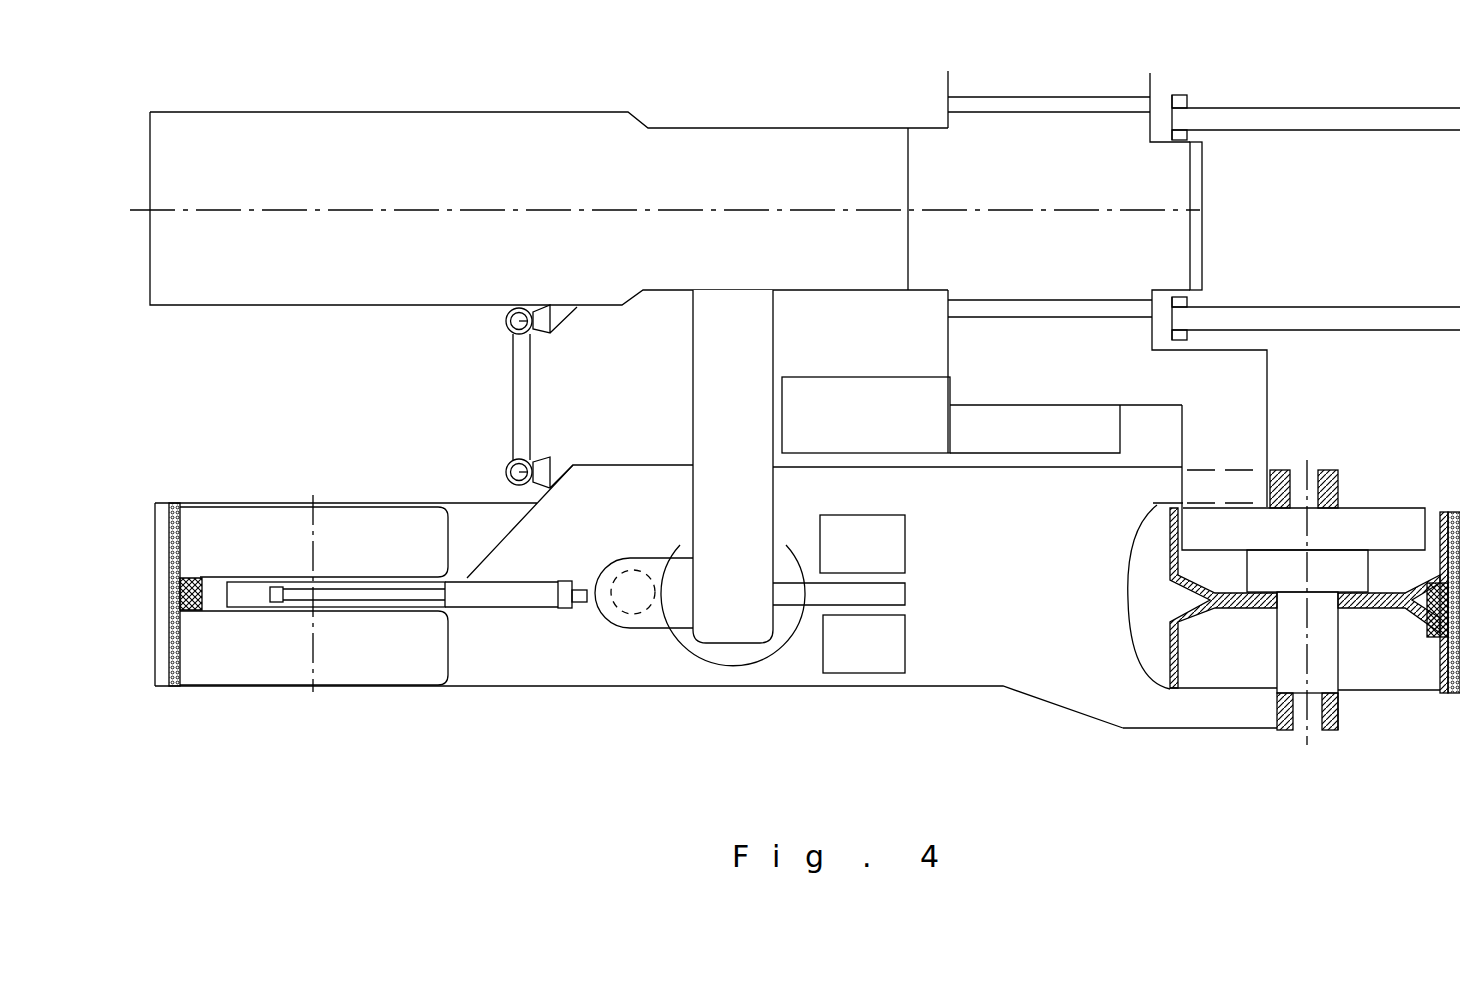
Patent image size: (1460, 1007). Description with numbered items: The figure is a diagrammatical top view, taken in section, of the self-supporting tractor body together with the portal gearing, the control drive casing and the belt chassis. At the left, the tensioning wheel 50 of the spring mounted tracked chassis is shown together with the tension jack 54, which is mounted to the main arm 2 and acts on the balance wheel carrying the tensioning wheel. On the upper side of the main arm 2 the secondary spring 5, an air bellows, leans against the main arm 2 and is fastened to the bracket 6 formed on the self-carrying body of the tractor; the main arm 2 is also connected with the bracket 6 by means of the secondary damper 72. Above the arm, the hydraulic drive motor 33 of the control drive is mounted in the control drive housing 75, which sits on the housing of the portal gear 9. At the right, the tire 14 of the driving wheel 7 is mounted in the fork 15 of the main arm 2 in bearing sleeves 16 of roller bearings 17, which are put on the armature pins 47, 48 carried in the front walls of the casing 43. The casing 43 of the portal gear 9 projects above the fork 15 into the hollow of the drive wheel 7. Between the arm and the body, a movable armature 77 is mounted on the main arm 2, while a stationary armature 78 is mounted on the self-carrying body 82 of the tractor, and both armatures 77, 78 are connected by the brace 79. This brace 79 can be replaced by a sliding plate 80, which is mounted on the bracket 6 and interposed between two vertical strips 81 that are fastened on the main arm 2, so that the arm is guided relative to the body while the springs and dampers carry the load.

The main arm 2 is at (537, 643).
The secondary spring 5 is at (727, 657).
The bracket 6 is at (747, 610).
The drive wheel 7 is at (1212, 612).
The portal gear 9 is at (1202, 382).
The tire 14 is at (1440, 512).
The fork 15 is at (1150, 705).
The bearing sleeves 16 is at (1285, 730).
The roller bearings 17 is at (1340, 723).
The hydraulic drive motor 33 is at (807, 393).
The casing 43 is at (1227, 428).
The armature pin 47 is at (1302, 717).
The armature pin 48 is at (1313, 483).
The tensioning wheel 50 is at (350, 662).
The tension jack 54 is at (460, 597).
The secondary damper 72 is at (625, 620).
The control drive housing 75 is at (1047, 432).
The movable armature 77 is at (506, 471).
The stationary armature 78 is at (503, 325).
The brace 79 is at (520, 388).
The sliding plate 80 is at (855, 597).
The vertical strips 81 is at (898, 647).
The self-carrying body 82 is at (1103, 126).